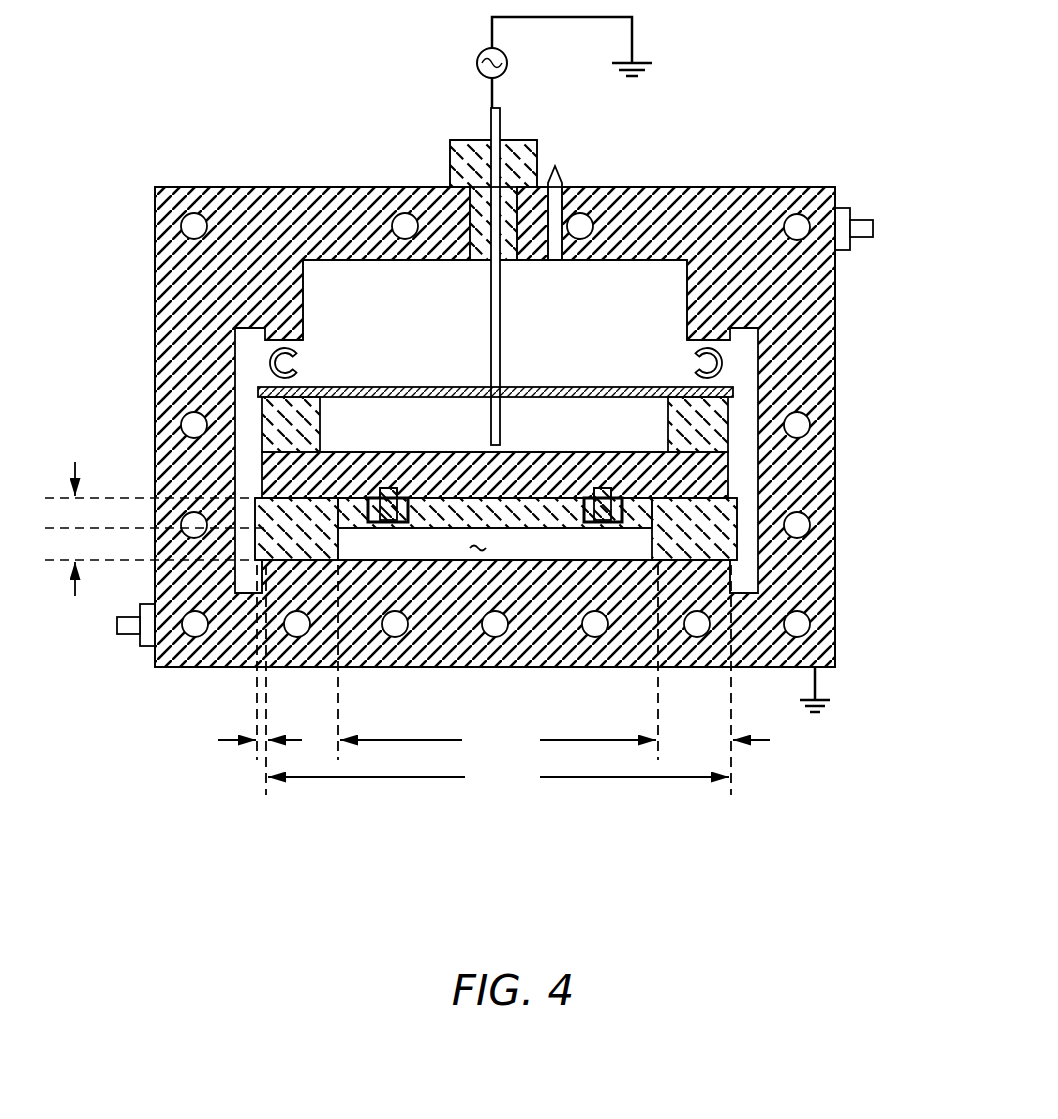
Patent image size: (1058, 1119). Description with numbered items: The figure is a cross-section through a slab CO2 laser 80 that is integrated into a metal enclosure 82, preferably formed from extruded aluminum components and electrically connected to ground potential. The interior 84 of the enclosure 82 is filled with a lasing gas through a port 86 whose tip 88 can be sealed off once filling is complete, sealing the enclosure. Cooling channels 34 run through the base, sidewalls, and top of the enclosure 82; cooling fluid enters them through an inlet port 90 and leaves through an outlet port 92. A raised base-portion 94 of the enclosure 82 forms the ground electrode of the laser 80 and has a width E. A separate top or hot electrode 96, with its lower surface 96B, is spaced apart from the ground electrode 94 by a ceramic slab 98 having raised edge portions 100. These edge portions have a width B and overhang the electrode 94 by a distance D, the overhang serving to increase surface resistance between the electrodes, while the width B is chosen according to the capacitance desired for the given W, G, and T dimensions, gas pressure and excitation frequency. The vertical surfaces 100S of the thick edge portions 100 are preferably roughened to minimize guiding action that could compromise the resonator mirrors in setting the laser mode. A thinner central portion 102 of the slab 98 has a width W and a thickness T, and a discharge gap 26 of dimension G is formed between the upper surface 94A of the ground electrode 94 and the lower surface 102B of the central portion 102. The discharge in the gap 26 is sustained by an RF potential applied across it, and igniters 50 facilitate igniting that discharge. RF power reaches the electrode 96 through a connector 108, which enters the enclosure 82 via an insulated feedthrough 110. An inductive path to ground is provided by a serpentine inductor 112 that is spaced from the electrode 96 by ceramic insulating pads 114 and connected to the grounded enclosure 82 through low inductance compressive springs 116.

The slab CO2 laser 80 is at (665, 846).
The metal enclosure 82 is at (260, 181).
The interior 84 is at (412, 354).
The port 86 is at (560, 198).
The tip 88 is at (556, 176).
The inlet port 90 is at (138, 642).
The outlet port 92 is at (862, 218).
The raised base-portion 94 is at (588, 572).
The upper surface 94A is at (522, 561).
The top electrode 96 is at (737, 474).
The lower surface of top electrode 96B is at (566, 500).
The ceramic slab 98 is at (744, 514).
The raised edge portions 100 is at (286, 522).
The vertical surfaces 100S is at (339, 531).
The central portion 102 is at (357, 513).
The lower surface 102B is at (443, 529).
The connector 108 is at (490, 285).
The insulated feedthrough 110 is at (452, 141).
The serpentine inductor 112 is at (258, 387).
The ceramic insulating pads 114 is at (735, 392).
The compressive springs 116 is at (268, 358).
The cooling channels 34 is at (186, 220).
The igniters 50 is at (369, 494).
The discharge gap 26 is at (478, 552).
The thickness T is at (156, 511).
The gap dimension G is at (72, 565).
The overhang distance D is at (249, 680).
The width of central portion W is at (498, 662).
The width of edge portions B is at (728, 680).
The electrode width E is at (498, 777).